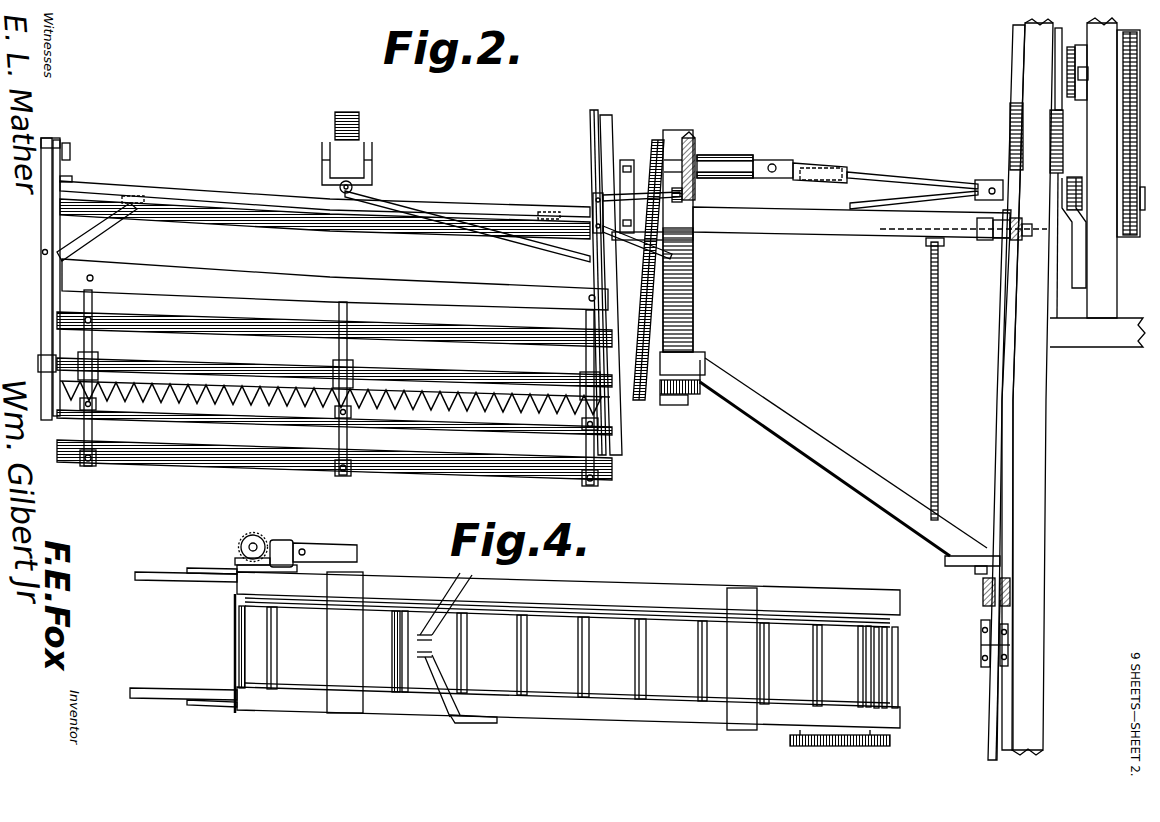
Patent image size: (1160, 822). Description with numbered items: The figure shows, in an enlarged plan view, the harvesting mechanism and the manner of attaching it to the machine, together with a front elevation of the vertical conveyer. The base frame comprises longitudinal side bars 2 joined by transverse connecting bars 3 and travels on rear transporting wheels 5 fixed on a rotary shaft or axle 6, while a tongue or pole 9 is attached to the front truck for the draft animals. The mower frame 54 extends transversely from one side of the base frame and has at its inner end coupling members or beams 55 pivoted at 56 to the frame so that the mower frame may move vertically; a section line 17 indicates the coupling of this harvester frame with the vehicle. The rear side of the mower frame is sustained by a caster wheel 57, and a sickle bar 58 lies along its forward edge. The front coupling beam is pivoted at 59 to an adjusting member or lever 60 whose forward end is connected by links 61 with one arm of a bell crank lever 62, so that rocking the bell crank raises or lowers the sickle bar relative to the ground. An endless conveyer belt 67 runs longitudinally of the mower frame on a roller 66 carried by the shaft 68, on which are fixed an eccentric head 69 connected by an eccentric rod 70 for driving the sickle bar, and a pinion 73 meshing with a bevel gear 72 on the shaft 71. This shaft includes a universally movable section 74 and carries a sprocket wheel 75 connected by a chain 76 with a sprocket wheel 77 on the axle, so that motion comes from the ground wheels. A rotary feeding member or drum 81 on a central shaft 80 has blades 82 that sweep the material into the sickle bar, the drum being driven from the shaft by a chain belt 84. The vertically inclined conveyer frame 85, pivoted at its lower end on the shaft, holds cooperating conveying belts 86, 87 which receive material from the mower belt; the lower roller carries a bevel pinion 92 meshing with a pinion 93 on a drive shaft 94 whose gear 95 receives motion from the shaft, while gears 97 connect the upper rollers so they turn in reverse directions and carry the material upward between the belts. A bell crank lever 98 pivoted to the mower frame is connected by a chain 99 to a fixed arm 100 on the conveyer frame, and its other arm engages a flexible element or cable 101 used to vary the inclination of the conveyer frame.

In FIG. 2, the longitudinal side bar 2 is at (1040, 408).
In FIG. 2, the transverse connecting bar 3 is at (1097, 332).
In FIG. 2, the rear transporting wheel 5 is at (1013, 53).
In FIG. 2, the rotary shaft or axle 6 is at (1085, 67).
In FIG. 2, the tongue or pole 9 is at (41, 232).
In FIG. 2, the section line 17— 17 is at (1046, 230).
In FIG. 2, the mower frame 54 is at (325, 183).
In FIG. 2, the coupling member or beam 55 is at (832, 458).
In FIG. 2, the pivot 56 is at (990, 243).
In FIG. 2, the caster wheel 57 is at (346, 112).
In FIG. 2, the sickle bar 58 is at (420, 372).
In FIG. 2, the pivot 59 is at (975, 572).
In FIG. 2, the adjusting member or lever 60 is at (1003, 300).
In FIG. 2, the link 61 is at (981, 644).
In FIG. 2, the bell crank lever 62 is at (990, 690).
In FIG. 2, the roller 66 is at (680, 352).
In FIG. 2, the endless conveyer belt 67 is at (325, 233).
In FIG. 2, the shaft 68 is at (693, 236).
In FIG. 2, the eccentric head 69 is at (692, 394).
In FIG. 2, the eccentric rod 70 is at (668, 406).
In FIG. 2, the shaft 71 is at (762, 162).
In FIG. 2, the bevel gear 72 is at (695, 148).
In FIG. 2, the pinion 73 is at (640, 106).
In FIG. 2, the universally movable section 74 is at (822, 166).
In FIG. 2, the sprocket wheel 75 is at (1134, 237).
In FIG. 2, the chain 76 is at (1120, 137).
In FIG. 2, the sprocket wheel 77 is at (1127, 73).
In FIG. 2, the central shaft 80 is at (228, 366).
In FIG. 2, the rotary feeding member or drum 81 is at (100, 300).
In FIG. 2, the blade 82 is at (186, 280).
In FIG. 2, the chain belt 84 is at (693, 296).
In FIG. 4, the conveyer frame 85 is at (706, 592).
In FIG. 4, the conveying belt 86 is at (600, 612).
In FIG. 4, the conveying belt 87 is at (250, 635).
In FIG. 4, the bevel pinion 92 is at (240, 558).
In FIG. 4, the pinion 93 is at (256, 533).
In FIG. 4, the drive shaft 94 is at (340, 543).
In FIG. 2, the gear 95 is at (1091, 191).
In FIG. 2, the gears 97 is at (898, 186).
In FIG. 4, the gears 97 is at (860, 746).
In FIG. 2, the bell crank lever 98 is at (600, 210).
In FIG. 2, the chain 99 is at (620, 260).
In FIG. 4, the fixed arm 100 is at (455, 585).
In FIG. 2, the flexible element or cable 101 is at (612, 197).